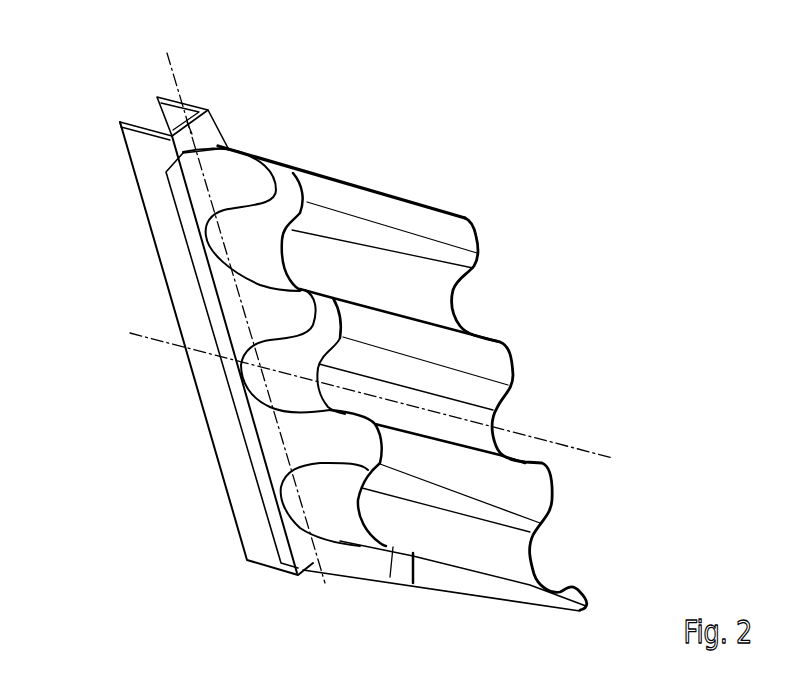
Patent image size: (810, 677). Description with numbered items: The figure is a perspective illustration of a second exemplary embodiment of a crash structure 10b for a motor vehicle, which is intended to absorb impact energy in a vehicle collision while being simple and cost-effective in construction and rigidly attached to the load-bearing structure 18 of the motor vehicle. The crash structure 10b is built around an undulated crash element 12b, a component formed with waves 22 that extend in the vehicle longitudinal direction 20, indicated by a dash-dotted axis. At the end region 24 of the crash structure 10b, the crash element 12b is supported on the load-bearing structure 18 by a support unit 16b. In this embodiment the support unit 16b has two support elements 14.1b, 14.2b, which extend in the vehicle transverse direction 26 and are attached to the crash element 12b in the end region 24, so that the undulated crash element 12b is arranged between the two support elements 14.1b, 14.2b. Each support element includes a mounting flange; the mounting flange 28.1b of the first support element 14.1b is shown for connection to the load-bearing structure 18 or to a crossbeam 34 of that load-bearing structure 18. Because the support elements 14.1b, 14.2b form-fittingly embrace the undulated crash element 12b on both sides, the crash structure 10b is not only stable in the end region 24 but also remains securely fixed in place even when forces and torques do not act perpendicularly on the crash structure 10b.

The crash structure 10b is at (571, 274).
The crash element 12b is at (449, 256).
The support element 14.1b is at (284, 187).
The support element 14.2b is at (219, 144).
The support unit 16b is at (223, 105).
The load-bearing structure 18 is at (157, 225).
The crossbeam 34 is at (234, 354).
The vehicle longitudinal direction 20 is at (568, 448).
The waves 22 is at (428, 232).
The end region 24 is at (331, 581).
The vehicle transverse direction 26 is at (168, 82).
The mounting flange 28.1b is at (212, 293).